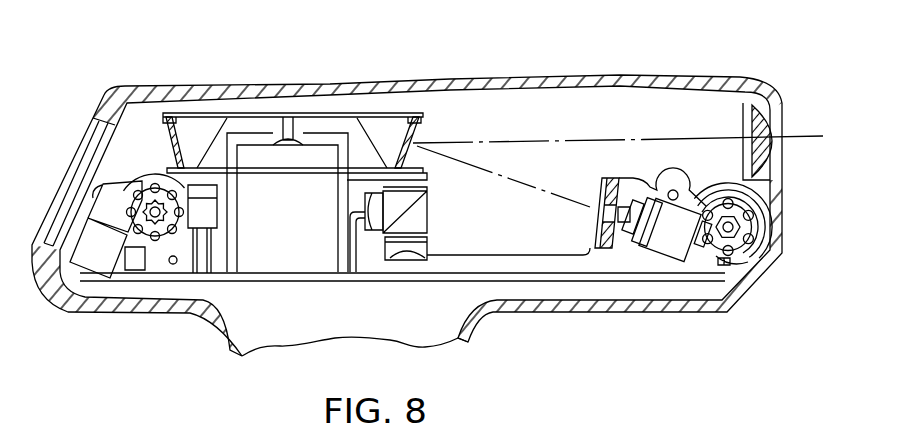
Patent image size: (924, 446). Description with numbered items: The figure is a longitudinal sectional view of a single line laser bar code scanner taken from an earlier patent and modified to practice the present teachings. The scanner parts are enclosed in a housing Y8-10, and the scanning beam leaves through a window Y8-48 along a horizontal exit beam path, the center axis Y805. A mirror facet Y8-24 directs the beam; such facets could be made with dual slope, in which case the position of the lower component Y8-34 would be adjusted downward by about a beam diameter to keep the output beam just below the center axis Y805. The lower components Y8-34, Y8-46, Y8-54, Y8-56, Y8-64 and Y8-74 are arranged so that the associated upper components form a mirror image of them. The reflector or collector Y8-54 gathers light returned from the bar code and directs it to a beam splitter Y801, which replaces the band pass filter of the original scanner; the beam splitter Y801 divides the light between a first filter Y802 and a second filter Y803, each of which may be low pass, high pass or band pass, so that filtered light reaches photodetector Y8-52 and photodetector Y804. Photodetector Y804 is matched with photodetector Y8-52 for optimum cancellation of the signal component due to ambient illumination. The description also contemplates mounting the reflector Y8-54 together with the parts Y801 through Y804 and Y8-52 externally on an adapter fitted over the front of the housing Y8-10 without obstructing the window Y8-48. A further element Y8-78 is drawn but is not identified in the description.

The housing Y8-10 is at (565, 78).
The mirror facet Y8-24 is at (415, 132).
The center axis Y805 is at (590, 138).
The lower component Y8-56 is at (618, 183).
The lower component Y8-64 is at (648, 186).
The window Y8-48 is at (773, 158).
The reflector Y8-54 is at (597, 231).
The beam splitter Y801 is at (428, 207).
The filter Y802 is at (377, 195).
The filter Y803 is at (410, 240).
The photodetector Y804 is at (425, 262).
The photodetector Y8-52 is at (372, 222).
The lower component Y8-46 is at (627, 228).
The lower component Y8-34 is at (672, 245).
The lower component Y8-74 is at (735, 227).
The gear support Y8-78 is at (735, 252).